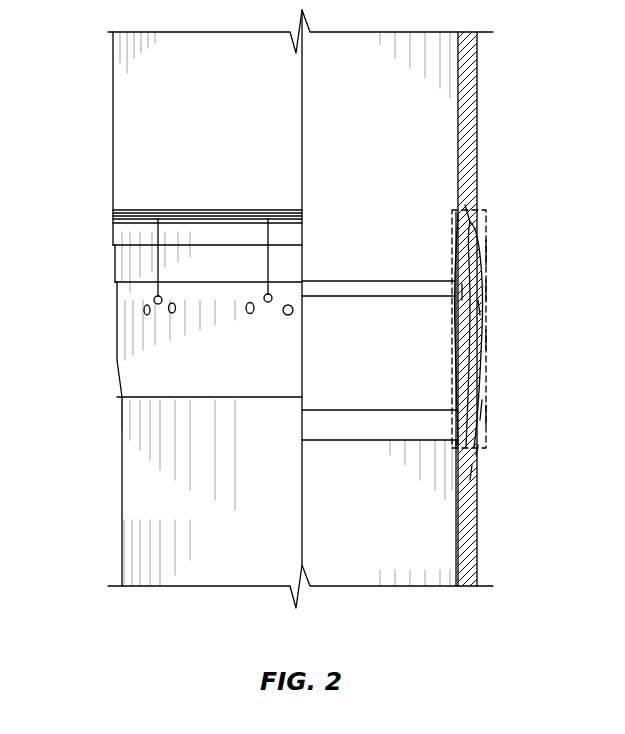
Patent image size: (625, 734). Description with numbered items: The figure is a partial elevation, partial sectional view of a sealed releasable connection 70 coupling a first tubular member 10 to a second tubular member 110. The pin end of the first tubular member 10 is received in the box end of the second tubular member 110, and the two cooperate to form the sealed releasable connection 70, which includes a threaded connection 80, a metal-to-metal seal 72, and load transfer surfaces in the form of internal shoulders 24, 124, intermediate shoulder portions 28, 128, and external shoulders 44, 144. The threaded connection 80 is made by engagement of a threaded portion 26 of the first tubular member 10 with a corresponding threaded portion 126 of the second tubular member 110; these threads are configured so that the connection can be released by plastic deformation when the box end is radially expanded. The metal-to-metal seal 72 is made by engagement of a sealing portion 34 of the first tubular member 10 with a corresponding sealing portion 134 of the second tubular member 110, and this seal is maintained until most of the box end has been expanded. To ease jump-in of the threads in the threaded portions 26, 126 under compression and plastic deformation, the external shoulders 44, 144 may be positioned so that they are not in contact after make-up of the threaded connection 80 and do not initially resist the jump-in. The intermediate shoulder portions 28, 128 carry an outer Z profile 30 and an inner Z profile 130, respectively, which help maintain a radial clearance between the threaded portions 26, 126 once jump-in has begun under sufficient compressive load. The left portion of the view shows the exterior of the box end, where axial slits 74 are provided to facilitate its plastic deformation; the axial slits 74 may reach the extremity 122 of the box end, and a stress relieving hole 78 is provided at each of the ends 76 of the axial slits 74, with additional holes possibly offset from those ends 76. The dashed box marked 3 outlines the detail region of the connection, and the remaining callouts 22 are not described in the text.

The first tubular member 10 is at (112, 106).
The second tubular member 110 is at (120, 485).
The extremity of the box end 122 is at (130, 215).
The axial slits 74 is at (268, 253).
The ends of the axial slits 76 is at (155, 293).
The stress relieving hole 78 is at (147, 316).
The intermediate shoulder portion 28 is at (442, 290).
The sealing portion 34 is at (455, 411).
The wall lower portion 22 is at (456, 449).
The detail view indicator 3 is at (487, 448).
The threaded portion 26 is at (451, 237).
The external shoulder 44 is at (478, 230).
The threaded connection 80 is at (478, 262).
The outer Z profile 30 is at (461, 283).
The external shoulder 144 is at (465, 205).
The threaded portion 126 is at (488, 253).
The intermediate shoulder portion 128 is at (488, 290).
The inner Z profile 130 is at (478, 302).
The sealed releasable connection 70 is at (488, 340).
The metal-to-metal seal 72 is at (482, 405).
The sealing portion 134 is at (481, 415).
The internal shoulder 124 is at (478, 445).
The internal shoulder 24 is at (472, 465).